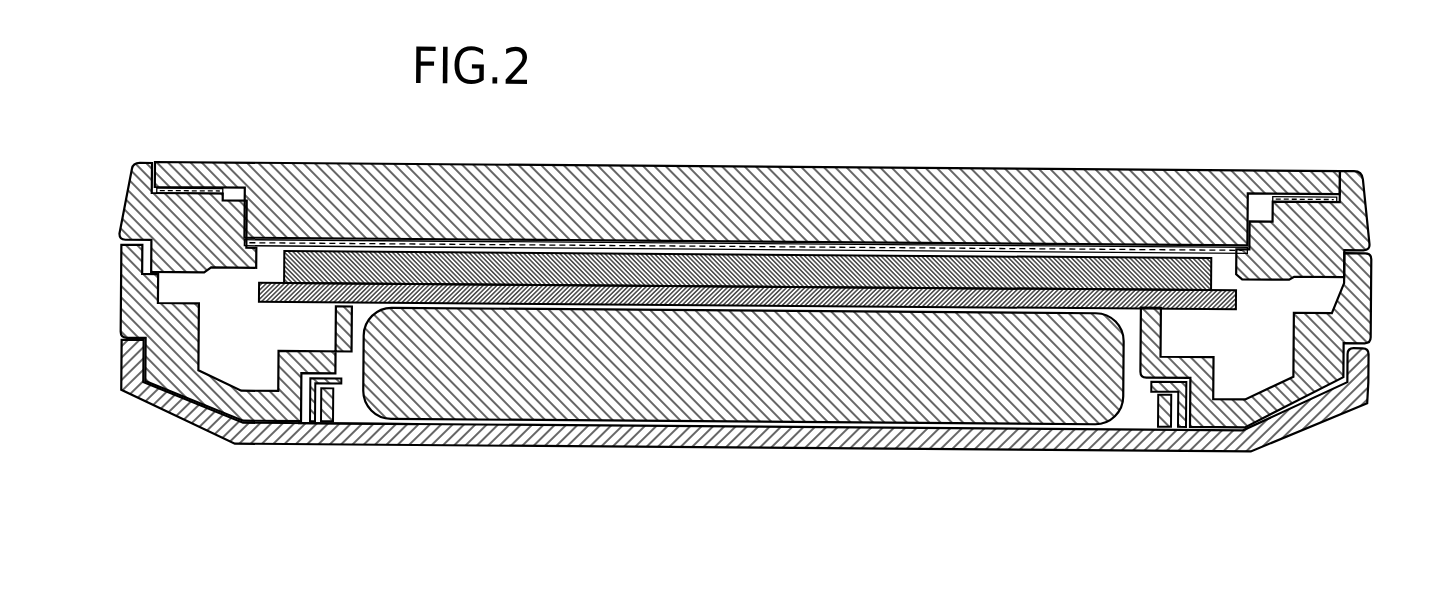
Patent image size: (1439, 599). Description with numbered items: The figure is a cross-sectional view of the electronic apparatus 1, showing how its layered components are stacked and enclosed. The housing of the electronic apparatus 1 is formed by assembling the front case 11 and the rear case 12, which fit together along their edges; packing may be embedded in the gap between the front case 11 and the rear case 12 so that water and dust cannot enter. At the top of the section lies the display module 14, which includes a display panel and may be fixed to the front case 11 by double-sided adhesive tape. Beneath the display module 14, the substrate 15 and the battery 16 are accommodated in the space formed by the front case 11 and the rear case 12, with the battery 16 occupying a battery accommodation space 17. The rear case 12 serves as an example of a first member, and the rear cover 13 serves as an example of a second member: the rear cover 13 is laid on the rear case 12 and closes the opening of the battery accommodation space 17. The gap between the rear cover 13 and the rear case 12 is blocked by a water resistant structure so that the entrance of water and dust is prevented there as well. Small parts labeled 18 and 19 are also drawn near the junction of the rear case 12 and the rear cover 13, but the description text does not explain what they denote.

The electronic apparatus 1 is at (760, 121).
The front case 11 is at (1370, 211).
The rear case 12 is at (1358, 295).
The rear cover 13 is at (1357, 369).
The display module 14 is at (1072, 171).
The substrate 15 is at (1224, 302).
The battery 16 is at (836, 395).
The battery accommodation space 17 is at (364, 404).
The bracket 18 is at (314, 425).
The boss 19 is at (332, 409).